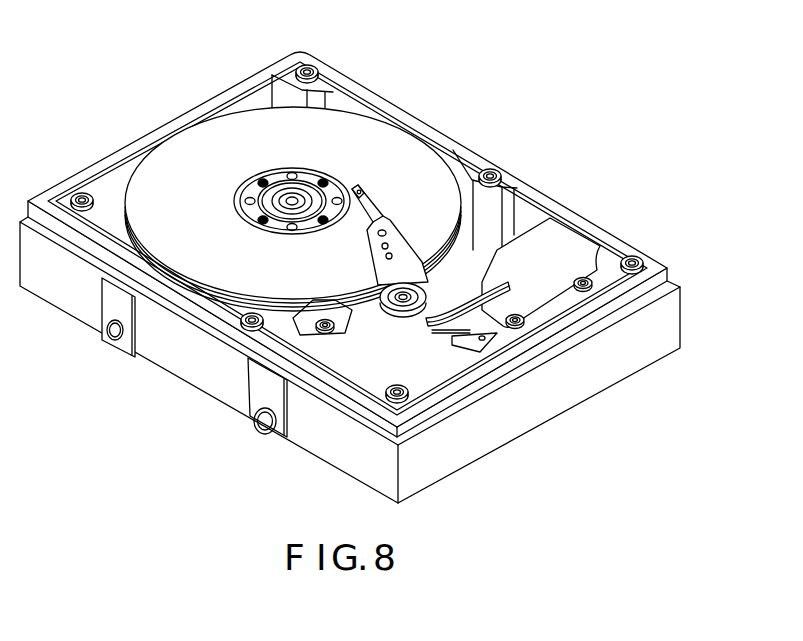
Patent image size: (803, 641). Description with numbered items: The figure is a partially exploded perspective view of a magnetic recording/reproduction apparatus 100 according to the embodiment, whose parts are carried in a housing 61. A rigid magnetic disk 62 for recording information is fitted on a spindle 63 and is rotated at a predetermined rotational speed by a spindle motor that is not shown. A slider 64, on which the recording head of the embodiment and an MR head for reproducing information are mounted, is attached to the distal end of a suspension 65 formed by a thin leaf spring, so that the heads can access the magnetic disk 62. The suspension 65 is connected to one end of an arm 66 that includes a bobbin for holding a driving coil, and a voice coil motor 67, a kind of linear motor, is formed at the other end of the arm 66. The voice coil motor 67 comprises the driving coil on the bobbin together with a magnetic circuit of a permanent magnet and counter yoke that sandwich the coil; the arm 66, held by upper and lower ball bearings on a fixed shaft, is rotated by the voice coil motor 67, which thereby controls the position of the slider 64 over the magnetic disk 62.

The magnetic recording/reproduction apparatus 100 is at (478, 62).
The housing 61 is at (588, 375).
The magnetic disk 62 is at (348, 140).
The spindle 63 is at (242, 188).
The slider 64 is at (357, 192).
The suspension 65 is at (388, 245).
The arm 66 is at (392, 302).
The voice coil motor 67 is at (415, 258).